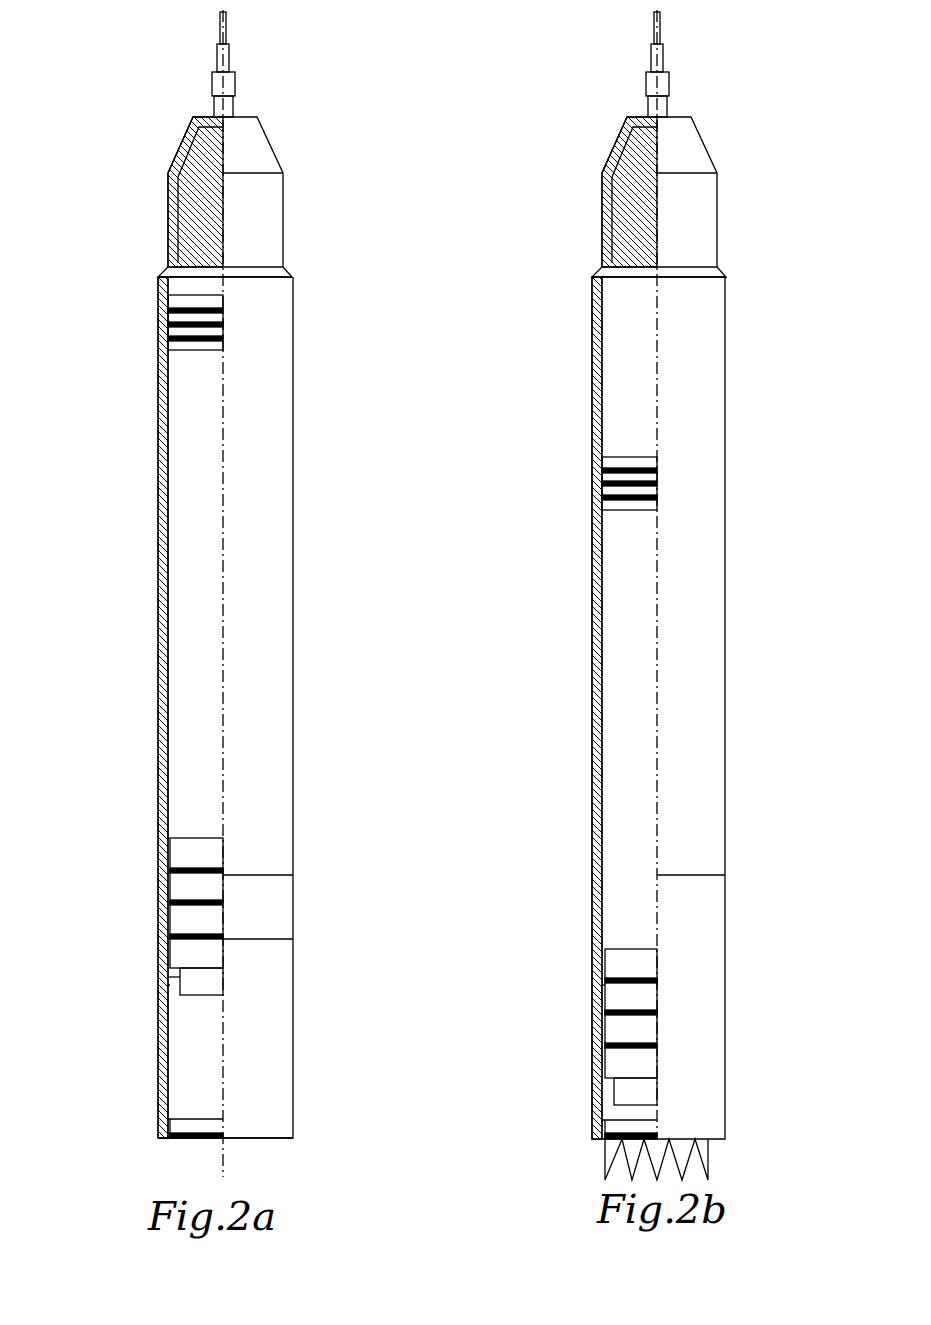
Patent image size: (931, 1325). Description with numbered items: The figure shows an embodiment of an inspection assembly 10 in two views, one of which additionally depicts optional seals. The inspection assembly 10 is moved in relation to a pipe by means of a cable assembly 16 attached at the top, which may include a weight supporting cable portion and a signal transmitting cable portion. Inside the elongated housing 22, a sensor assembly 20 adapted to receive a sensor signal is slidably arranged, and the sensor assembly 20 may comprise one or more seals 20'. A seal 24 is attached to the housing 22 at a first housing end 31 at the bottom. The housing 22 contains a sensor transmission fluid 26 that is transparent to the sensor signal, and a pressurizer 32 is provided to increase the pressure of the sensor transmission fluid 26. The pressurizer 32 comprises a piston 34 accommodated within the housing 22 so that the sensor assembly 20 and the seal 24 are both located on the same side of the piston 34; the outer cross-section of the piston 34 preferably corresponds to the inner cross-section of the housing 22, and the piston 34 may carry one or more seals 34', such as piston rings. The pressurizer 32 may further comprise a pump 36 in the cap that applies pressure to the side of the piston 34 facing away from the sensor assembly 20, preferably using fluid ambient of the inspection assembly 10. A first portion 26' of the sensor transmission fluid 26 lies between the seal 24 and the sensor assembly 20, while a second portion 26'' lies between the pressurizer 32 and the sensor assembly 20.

In FIG. 2A, the inspection assembly 10 is at (300, 63).
In FIG. 2A, the cable assembly 16 is at (198, 72).
In FIG. 2A, the sensor assembly 20 is at (201, 903).
In FIG. 2B, the sensor assembly 20 is at (592, 1009).
In FIG. 2B, the seals 20' is at (581, 977).
In FIG. 2A, the housing 22 is at (157, 392).
In FIG. 2A, the seal 24 is at (190, 1128).
In FIG. 2A, the sensor transmission fluid 26 is at (155, 1013).
In FIG. 2A, the first portion of the sensor transmission fluid 26' is at (264, 1049).
In FIG. 2A, the second portion of the sensor transmission fluid 26'' is at (287, 593).
In FIG. 2A, the first housing end 31 is at (263, 1150).
In FIG. 2A, the pressurizer 32 is at (118, 255).
In FIG. 2A, the piston 34 is at (163, 322).
In FIG. 2B, the piston 34 is at (594, 485).
In FIG. 2B, the seals 34' is at (583, 445).
In FIG. 2A, the pump 36 is at (200, 212).